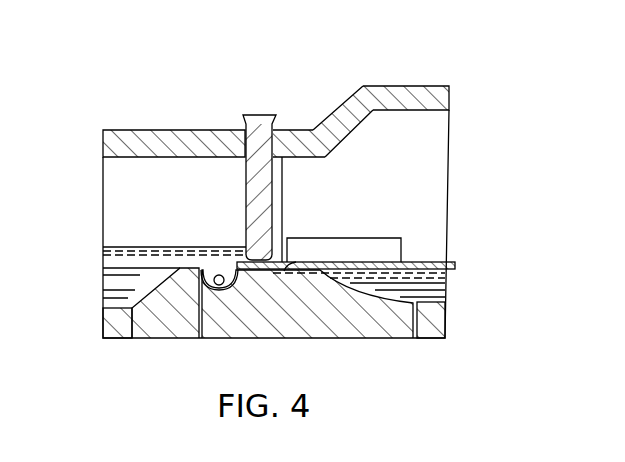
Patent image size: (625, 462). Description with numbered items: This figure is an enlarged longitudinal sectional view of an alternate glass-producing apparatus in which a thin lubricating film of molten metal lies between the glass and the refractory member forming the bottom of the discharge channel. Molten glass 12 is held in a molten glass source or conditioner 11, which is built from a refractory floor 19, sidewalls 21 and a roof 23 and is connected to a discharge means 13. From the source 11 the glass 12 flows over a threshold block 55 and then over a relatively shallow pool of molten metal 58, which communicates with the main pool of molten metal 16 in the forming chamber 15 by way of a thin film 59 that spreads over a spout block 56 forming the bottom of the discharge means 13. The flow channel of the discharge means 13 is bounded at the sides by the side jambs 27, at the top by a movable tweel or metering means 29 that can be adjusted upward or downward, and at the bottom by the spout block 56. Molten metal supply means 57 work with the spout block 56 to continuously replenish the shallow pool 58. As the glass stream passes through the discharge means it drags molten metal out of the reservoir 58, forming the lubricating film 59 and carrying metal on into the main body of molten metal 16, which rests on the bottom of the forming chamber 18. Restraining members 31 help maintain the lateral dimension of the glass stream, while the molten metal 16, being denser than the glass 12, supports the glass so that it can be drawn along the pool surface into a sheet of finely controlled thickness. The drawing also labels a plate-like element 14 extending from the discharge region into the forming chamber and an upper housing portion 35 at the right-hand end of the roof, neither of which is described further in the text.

The molten glass conditioner 11 is at (192, 98).
The molten glass 12 is at (110, 281).
The discharge means 13 is at (272, 95).
The diaphragm plate 14 is at (455, 265).
The forming chamber 15 is at (399, 60).
The molten metal 16 is at (440, 288).
The bottom of the forming chamber 18 is at (440, 322).
The refractory floor 19 is at (108, 322).
The sidewalls 21 is at (166, 214).
The roof 23 is at (103, 143).
The side jambs 27 is at (282, 181).
The metering means 29 is at (255, 190).
The restraining members 31 is at (385, 237).
The cover flange 35 is at (440, 98).
The threshold block 55 is at (165, 340).
The spout block 56 is at (272, 336).
The molten metal supply means 57 is at (215, 270).
The shallow pool of molten metal 58 is at (224, 273).
The thin film 59 is at (290, 266).